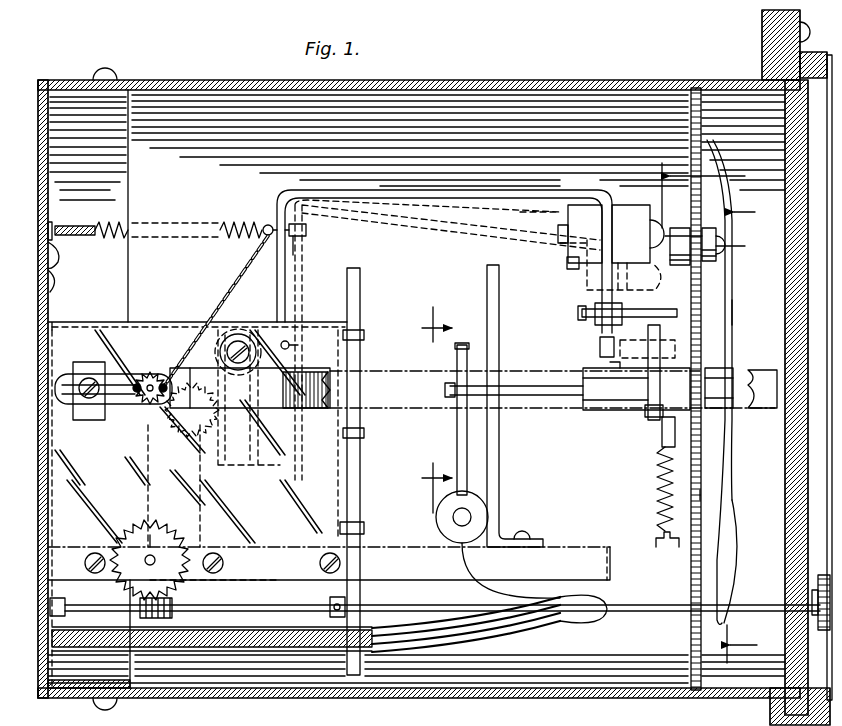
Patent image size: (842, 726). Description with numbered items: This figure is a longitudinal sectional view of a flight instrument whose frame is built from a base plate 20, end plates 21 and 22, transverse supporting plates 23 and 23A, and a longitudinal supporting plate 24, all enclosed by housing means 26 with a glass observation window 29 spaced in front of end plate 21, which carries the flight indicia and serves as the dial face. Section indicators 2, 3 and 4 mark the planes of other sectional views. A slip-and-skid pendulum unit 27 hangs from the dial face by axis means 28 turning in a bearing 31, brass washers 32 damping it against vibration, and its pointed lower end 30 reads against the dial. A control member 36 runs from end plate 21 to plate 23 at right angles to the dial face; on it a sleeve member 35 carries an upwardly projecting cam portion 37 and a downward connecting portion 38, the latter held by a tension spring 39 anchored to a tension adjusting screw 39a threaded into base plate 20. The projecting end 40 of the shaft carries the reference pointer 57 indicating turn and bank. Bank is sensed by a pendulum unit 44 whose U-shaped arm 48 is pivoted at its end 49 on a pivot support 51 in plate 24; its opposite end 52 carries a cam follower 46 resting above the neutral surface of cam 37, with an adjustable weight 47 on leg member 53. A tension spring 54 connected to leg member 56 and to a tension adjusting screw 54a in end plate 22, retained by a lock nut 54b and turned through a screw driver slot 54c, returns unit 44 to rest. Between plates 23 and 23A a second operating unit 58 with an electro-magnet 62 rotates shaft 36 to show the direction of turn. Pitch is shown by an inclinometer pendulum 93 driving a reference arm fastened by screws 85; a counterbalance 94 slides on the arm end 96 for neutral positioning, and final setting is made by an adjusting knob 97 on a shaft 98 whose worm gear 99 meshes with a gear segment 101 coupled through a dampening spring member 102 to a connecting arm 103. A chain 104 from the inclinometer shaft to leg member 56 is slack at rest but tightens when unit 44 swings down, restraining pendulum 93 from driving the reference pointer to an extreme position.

The section line 2-2 / plate 2 is at (702, 490).
The section line 3- 3 is at (750, 433).
The section line 4- 4 is at (425, 410).
The base plate 20 is at (585, 547).
The end plate 21 is at (691, 116).
The end plate 22 is at (89, 206).
The intermediate supporting plate 23 is at (495, 270).
The intermediate supporting plate 23A is at (360, 270).
The intermediate supporting plate 24 is at (300, 322).
The housing means 26 is at (543, 80).
The pendulum unit 27 is at (720, 447).
The axis means 28 is at (722, 238).
The glass observation window 29 is at (773, 397).
The lower end of pendulum 30 is at (728, 553).
The bearing 31 is at (702, 262).
The brass washers 32 is at (678, 228).
The sleeve member 35 is at (600, 410).
The control member 36 is at (520, 385).
The cam portion 37 is at (660, 333).
The connecting portion 38 is at (660, 428).
The tension spring 39 is at (660, 488).
The tension adjusting screw 39a is at (660, 540).
The end of control member 40 is at (720, 380).
The pendulum unit 44 is at (462, 190).
The cam follower portion 46 is at (590, 318).
The adjustable weight 47 is at (590, 263).
The arm 48 is at (418, 190).
The end of arm 49 is at (277, 306).
The pivot support 51 is at (303, 346).
The opposite end of arm 52 is at (600, 345).
The leg member 53 is at (612, 218).
The tension spring 54 is at (130, 222).
The tension adjusting screw 54a is at (72, 226).
The lock nut 54b is at (73, 259).
The screw driver slot 54c is at (67, 286).
The leg member 56 is at (296, 249).
The reference pointer 57 is at (733, 313).
The second operating unit 58 is at (457, 439).
The electro-magnet 62 is at (440, 517).
The screws 85 is at (150, 384).
The pendulum 93 is at (270, 487).
The counterbalance 94 is at (88, 418).
The arm end 96 is at (70, 362).
The adjusting knob 97 is at (818, 592).
The shaft 98 is at (329, 639).
The worm gear 99 is at (165, 618).
The gear segment 101 is at (180, 594).
The spring member 102 is at (132, 488).
The connecting arm 103 is at (148, 420).
The chain 104 is at (230, 300).